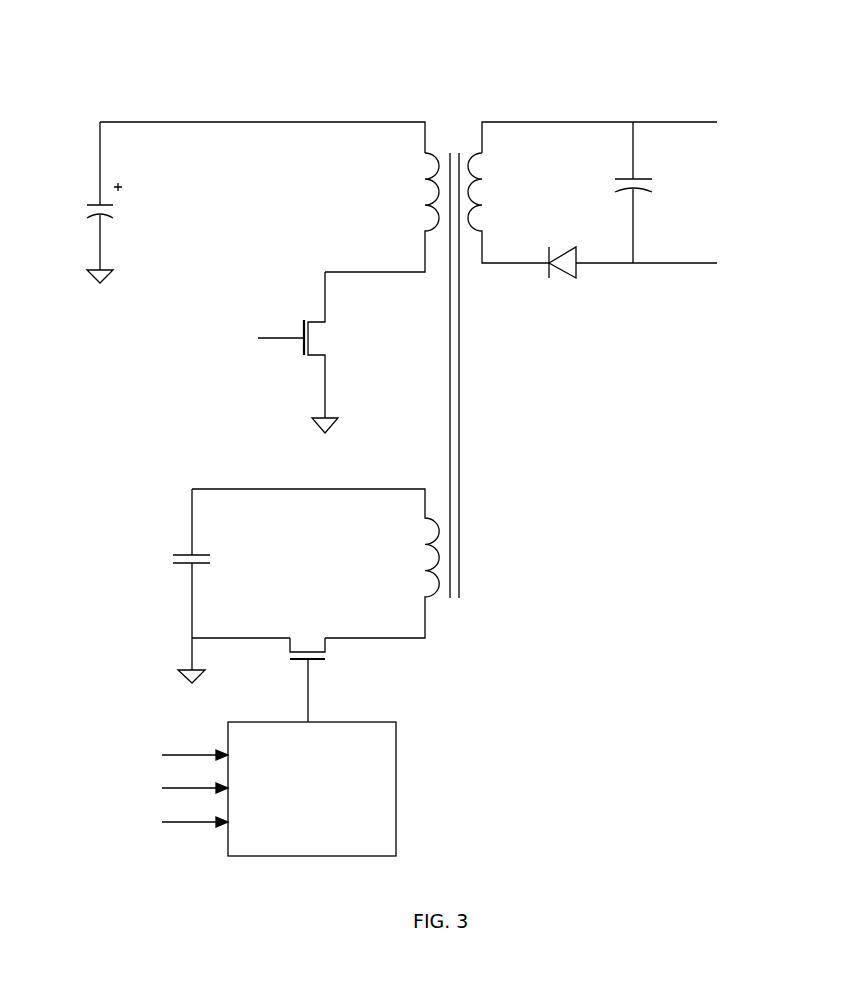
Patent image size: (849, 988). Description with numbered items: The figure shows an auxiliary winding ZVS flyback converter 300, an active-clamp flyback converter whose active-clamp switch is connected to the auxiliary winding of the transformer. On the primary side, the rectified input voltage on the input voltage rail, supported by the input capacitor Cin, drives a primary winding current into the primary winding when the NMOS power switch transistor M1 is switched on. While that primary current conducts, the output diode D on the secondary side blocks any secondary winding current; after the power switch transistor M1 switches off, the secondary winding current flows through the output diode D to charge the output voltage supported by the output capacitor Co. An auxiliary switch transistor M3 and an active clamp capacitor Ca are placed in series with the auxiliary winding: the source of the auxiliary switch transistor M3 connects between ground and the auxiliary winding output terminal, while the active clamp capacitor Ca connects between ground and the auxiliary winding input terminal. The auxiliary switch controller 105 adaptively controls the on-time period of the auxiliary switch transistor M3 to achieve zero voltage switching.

The auxiliary winding ZVS flyback converter 300 is at (411, 64).
The auxiliary switch controller 105 is at (396, 812).
The input capacitor Cin is at (83, 202).
The output capacitor Co is at (652, 192).
The active clamp capacitor Ca is at (231, 586).
The output diode D is at (562, 249).
The NMOS power switch transistor M1 is at (308, 352).
The auxiliary switch transistor M3 is at (307, 665).